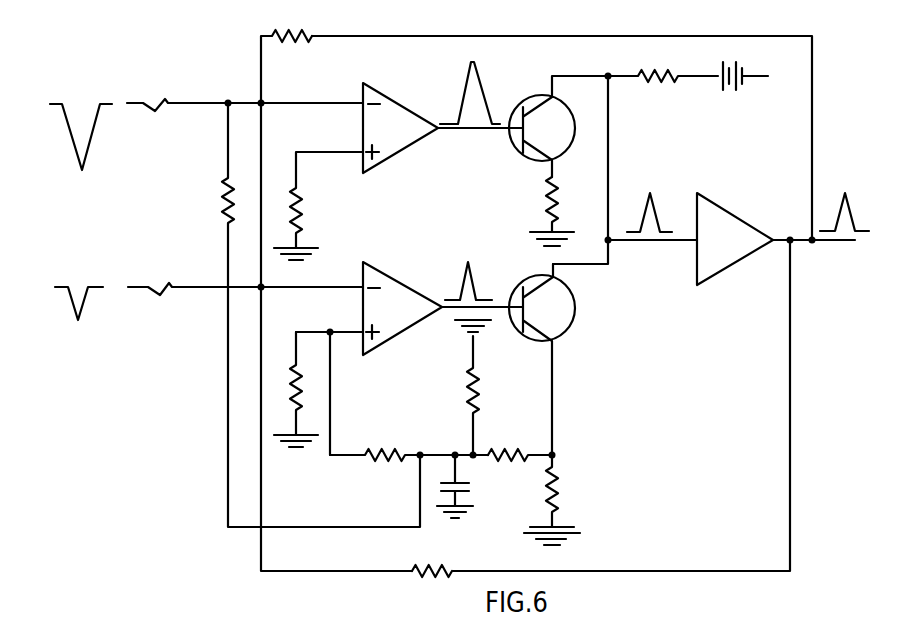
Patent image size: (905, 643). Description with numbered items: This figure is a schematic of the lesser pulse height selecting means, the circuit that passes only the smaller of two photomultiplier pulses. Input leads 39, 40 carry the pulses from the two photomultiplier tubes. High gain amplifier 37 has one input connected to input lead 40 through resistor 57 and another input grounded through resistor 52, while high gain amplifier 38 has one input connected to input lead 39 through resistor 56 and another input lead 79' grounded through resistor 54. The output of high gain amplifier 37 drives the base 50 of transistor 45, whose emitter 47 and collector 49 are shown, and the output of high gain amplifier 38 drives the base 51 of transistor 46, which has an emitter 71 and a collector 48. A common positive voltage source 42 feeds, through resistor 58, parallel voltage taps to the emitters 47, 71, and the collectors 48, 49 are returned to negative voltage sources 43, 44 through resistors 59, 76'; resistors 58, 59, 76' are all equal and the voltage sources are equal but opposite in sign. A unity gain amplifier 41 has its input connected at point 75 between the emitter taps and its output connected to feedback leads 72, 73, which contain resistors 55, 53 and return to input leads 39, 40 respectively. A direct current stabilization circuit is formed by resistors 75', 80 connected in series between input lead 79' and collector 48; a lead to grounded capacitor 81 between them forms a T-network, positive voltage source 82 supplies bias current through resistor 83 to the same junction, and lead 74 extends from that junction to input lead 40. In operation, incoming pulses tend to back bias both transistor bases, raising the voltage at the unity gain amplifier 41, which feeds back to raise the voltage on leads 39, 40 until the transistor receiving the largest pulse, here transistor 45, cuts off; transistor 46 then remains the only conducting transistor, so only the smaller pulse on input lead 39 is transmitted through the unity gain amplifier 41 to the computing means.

The high gain amplifier 37 is at (400, 128).
The high gain amplifier 38 is at (402, 308).
The input lead 39 is at (140, 285).
The input lead 40 is at (147, 100).
The unity gain amplifier 41 is at (735, 239).
The common voltage source 42 is at (758, 76).
The negative voltage source 43 is at (583, 533).
The negative voltage source 44 is at (527, 236).
The transistor 45 is at (532, 163).
The transistor 46 is at (522, 278).
The emitter 47 is at (528, 108).
The collector 48 is at (545, 358).
The collector 49 is at (542, 126).
The base 50 is at (520, 136).
The base 51 is at (520, 322).
The resistor 52 is at (300, 206).
The resistor 53 is at (312, 36).
The resistor 54 is at (304, 402).
The resistor 55 is at (437, 575).
The resistor 56 is at (165, 287).
The resistor 57 is at (163, 103).
The resistor 58 is at (662, 80).
The resistor 59 is at (556, 492).
The emitter 71 is at (548, 284).
The feedback lead 72 is at (668, 569).
The feedback lead 73 is at (690, 36).
The lead 74 is at (228, 428).
The input point 75 is at (625, 178).
The resistor 75' is at (409, 479).
The resistor 76' is at (571, 204).
The input lead 79' is at (329, 380).
The resistor 80 is at (500, 458).
The capacitor 81 is at (466, 489).
The positive voltage source 82 is at (456, 321).
The resistor 83 is at (465, 378).